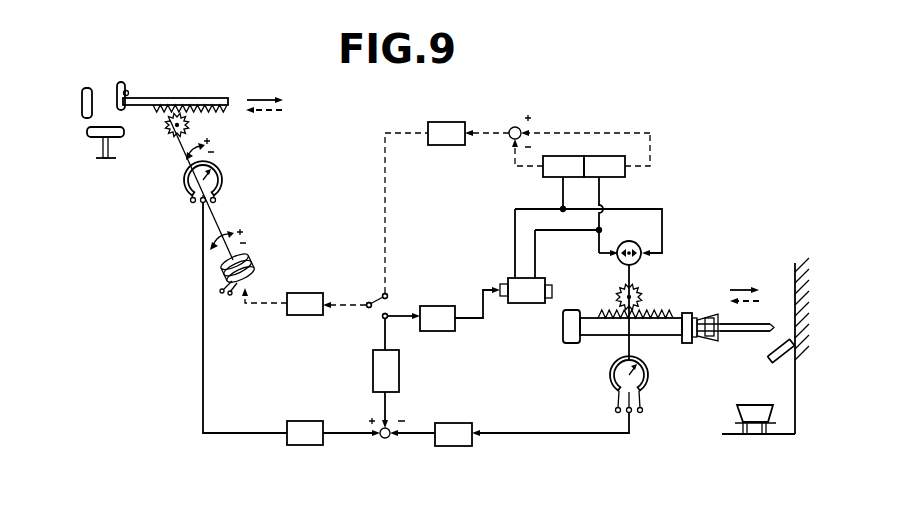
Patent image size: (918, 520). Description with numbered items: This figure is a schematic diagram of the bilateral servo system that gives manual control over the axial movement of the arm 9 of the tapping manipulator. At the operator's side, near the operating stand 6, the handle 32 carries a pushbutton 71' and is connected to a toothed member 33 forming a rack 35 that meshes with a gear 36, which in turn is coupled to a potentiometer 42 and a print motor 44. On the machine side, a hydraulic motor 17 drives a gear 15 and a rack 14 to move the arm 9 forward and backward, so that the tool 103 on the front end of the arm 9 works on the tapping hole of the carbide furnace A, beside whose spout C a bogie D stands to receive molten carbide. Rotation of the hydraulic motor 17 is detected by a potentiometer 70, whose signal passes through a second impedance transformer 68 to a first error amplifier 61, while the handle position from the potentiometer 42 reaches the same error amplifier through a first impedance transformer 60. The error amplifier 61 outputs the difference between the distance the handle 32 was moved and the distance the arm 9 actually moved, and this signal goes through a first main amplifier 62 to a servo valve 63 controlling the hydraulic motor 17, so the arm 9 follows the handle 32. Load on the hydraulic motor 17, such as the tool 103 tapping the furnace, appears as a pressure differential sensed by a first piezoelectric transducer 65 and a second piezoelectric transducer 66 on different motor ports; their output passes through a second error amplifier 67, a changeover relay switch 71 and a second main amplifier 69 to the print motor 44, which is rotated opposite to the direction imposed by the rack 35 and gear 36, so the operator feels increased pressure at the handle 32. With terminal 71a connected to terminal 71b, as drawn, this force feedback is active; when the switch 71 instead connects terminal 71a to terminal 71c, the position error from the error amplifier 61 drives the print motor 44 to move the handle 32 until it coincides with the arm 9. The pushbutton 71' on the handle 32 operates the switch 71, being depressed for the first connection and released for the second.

The operating stand 6 is at (93, 138).
The handle 32 is at (120, 74).
The pushbutton 71' is at (150, 66).
The control rack 33 is at (205, 98).
The rack 35 is at (213, 112).
The gear 36 is at (170, 134).
The potentiometer 42 is at (224, 172).
The print motor 44 is at (253, 274).
The second main amplifier 69 is at (306, 321).
The changeover relay switch 71 is at (375, 241).
The terminal 71a is at (350, 294).
The terminal 71b is at (404, 285).
The terminal 71c is at (369, 328).
The first error amplifier 61 is at (401, 373).
The first main amplifier 62 is at (437, 305).
The servo valve 63 is at (522, 304).
The second error amplifier 67 is at (447, 146).
The first piezoelectric transducer 65 is at (563, 166).
The second piezoelectric transducer 66 is at (603, 166).
The hydraulic motor 17 is at (632, 241).
The gear 15 is at (640, 292).
The rack 14 is at (598, 312).
The arm 9 is at (675, 314).
The tool 103 is at (742, 332).
The carbide furnace A is at (797, 283).
The spout C is at (783, 358).
The bogie D is at (766, 416).
The potentiometer 70 is at (651, 376).
The second impedance transformer 68 is at (450, 447).
The first impedance transformer 60 is at (303, 446).